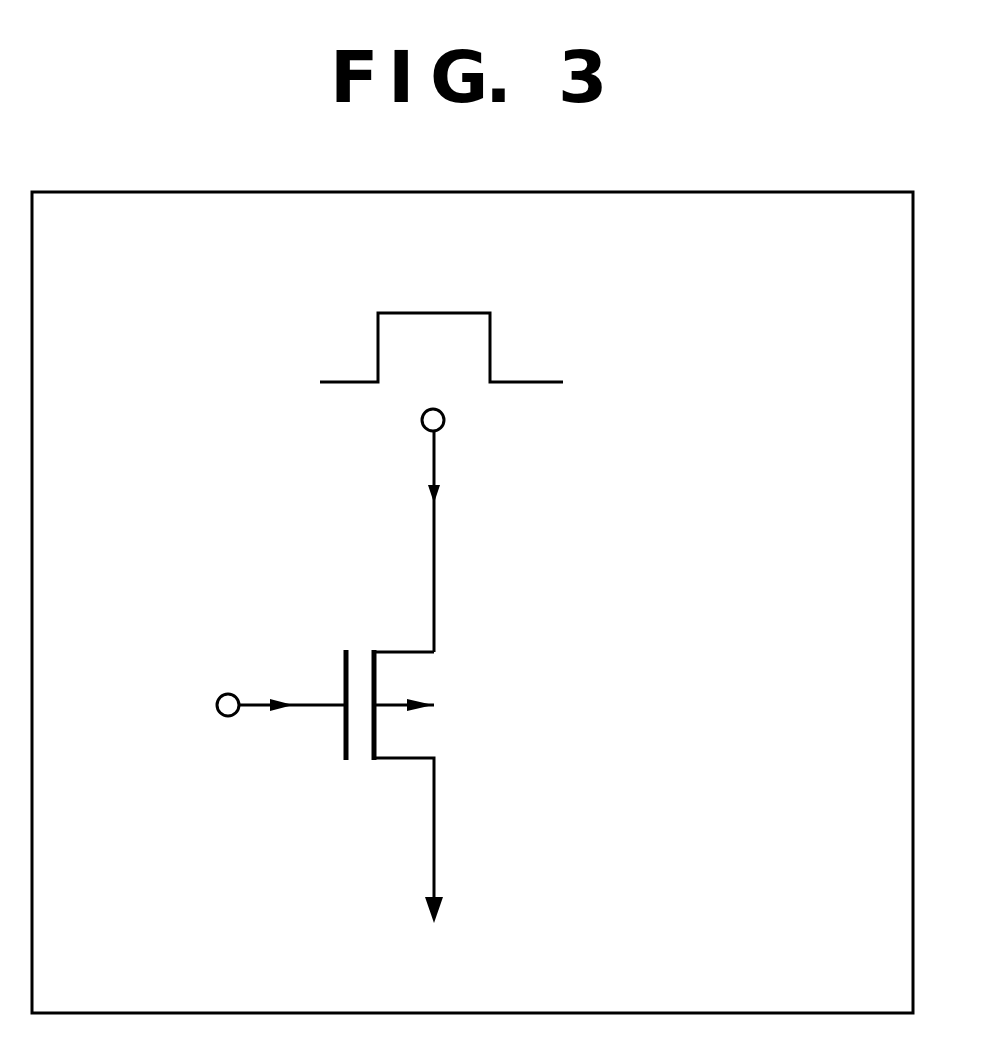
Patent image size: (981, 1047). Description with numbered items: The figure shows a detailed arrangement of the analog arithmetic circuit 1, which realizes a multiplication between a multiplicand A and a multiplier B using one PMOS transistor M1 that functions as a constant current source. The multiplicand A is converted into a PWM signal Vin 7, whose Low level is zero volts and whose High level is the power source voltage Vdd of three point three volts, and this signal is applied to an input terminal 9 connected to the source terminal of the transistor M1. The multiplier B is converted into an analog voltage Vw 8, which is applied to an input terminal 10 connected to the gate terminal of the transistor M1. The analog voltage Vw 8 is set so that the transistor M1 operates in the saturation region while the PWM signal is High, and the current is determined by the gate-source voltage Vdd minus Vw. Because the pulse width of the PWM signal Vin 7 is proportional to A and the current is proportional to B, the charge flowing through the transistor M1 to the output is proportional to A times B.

The analog arithmetic circuit 1 is at (142, 428).
The PWM signal Vin 7 is at (570, 286).
The analog voltage Vw 8 is at (215, 586).
The input terminal 9 is at (552, 416).
The input terminal 10 is at (254, 803).
The PMOS transistor M1 is at (433, 722).